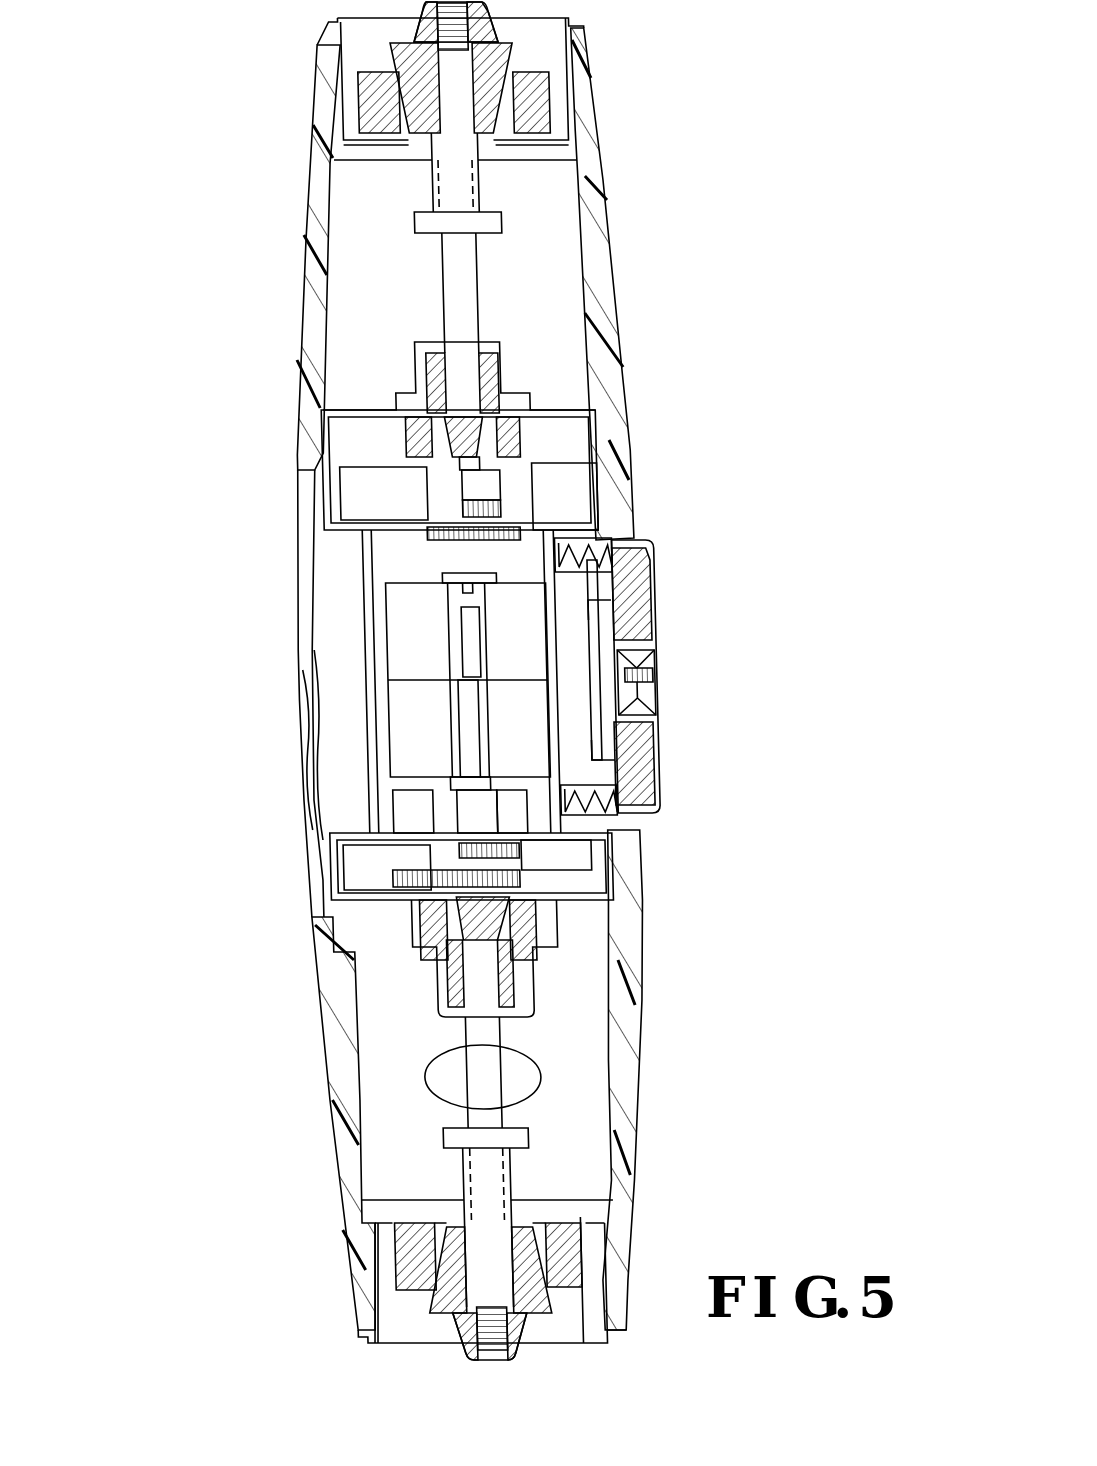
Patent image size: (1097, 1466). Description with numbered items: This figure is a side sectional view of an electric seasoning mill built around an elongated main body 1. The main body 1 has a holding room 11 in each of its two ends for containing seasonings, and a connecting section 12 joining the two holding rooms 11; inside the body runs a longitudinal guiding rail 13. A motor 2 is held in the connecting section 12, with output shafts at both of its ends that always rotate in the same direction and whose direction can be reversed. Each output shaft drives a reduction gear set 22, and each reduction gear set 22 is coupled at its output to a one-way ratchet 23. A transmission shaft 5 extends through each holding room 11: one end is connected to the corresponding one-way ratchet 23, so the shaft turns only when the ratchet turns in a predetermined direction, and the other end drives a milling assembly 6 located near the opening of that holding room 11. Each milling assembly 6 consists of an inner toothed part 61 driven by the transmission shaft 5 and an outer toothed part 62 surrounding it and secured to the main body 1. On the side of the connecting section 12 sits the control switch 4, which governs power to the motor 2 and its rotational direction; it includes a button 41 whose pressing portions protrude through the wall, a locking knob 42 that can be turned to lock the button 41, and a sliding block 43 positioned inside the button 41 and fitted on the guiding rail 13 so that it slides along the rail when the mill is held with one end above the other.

The main body 1 is at (630, 378).
The holding room 11 is at (347, 263).
The connecting section 12 is at (305, 560).
The longitudinal guiding rail 13 is at (600, 612).
The motor 2 is at (390, 625).
The reduction gear set 22 is at (450, 517).
The one-way ratchet 23 is at (426, 442).
The control switch 4 is at (689, 636).
The button 41 is at (657, 580).
The locking knob 42 is at (660, 658).
The sliding block 43 is at (686, 711).
The transmission shaft 5 is at (457, 263).
The milling assembly 6 is at (355, 681).
The inner toothed part 61 is at (410, 58).
The outer toothed part 62 is at (380, 103).